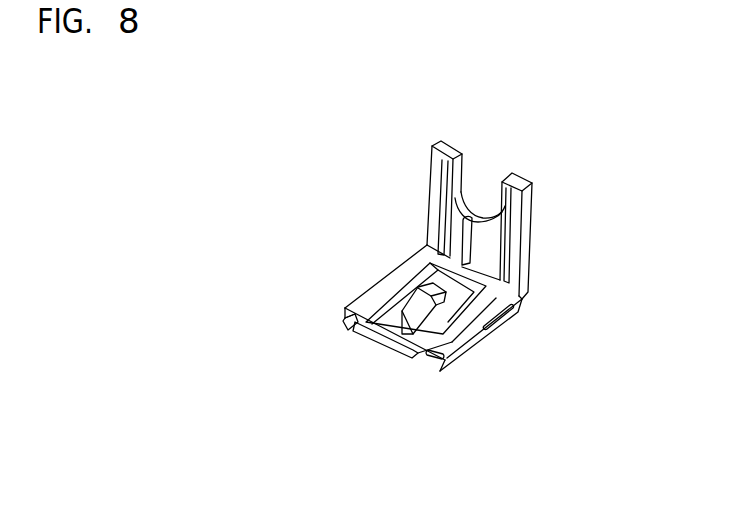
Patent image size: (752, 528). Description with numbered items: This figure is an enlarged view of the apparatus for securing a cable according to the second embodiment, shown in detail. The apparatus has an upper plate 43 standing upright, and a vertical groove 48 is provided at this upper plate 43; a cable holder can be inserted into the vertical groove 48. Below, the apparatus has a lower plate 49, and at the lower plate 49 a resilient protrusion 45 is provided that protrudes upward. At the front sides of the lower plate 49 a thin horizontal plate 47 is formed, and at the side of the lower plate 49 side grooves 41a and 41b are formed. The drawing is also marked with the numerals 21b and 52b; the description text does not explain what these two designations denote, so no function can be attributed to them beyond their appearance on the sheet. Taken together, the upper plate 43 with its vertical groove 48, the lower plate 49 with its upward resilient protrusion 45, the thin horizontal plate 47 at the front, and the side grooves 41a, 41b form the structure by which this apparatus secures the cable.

The connector housing 21b is at (371, 177).
The contact 52b is at (463, 14).
The vertical groove 48 is at (485, 177).
The upper plate 43 is at (525, 222).
The lower plate 49 is at (375, 288).
The side groove 41a is at (345, 315).
The side groove 41b is at (488, 322).
The thin horizontal plate 47 is at (380, 340).
The resilient protrusion 45 is at (430, 312).